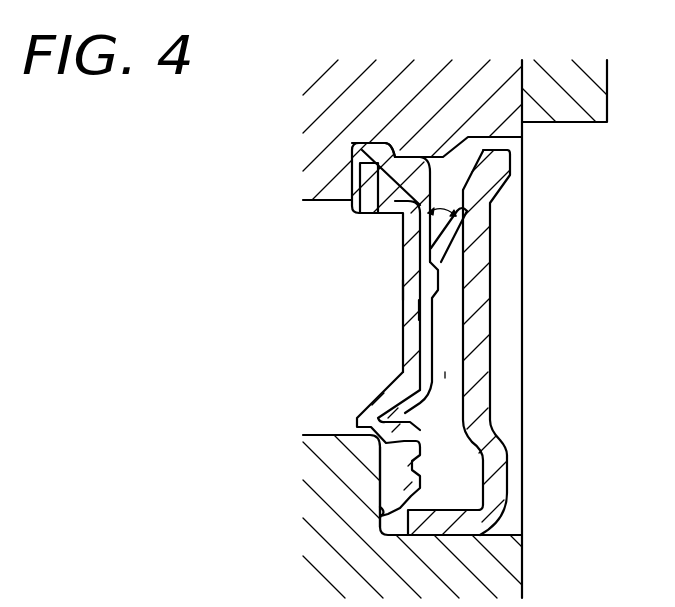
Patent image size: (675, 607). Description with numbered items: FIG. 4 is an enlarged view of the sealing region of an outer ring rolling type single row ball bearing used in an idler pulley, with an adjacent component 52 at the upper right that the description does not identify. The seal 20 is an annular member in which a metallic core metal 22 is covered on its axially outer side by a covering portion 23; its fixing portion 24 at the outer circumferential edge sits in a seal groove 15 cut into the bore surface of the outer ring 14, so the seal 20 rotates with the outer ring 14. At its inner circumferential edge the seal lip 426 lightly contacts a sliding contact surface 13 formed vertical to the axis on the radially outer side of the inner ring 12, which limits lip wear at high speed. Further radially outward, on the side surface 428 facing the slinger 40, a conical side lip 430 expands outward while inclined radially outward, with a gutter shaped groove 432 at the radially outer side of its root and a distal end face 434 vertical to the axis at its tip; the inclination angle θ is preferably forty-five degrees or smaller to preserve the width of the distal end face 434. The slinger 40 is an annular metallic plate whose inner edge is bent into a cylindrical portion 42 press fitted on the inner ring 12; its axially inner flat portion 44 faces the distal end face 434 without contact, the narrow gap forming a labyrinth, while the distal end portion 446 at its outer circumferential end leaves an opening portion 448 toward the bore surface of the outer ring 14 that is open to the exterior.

The inner ring 12 is at (455, 587).
The sliding contact surface 13 is at (378, 520).
The outer ring 14 is at (476, 96).
The seal groove 15 is at (418, 148).
The seal 20 is at (436, 372).
The core metal 22 is at (407, 286).
The covering portion 23 is at (420, 401).
The fixing portion 24 is at (372, 140).
The slinger 40 is at (490, 358).
The cylindrical portion 42 is at (480, 537).
The flat portion 44 is at (462, 297).
The cover member 52 is at (588, 86).
The dust lip 426 is at (380, 486).
The side lip 428 is at (405, 310).
The main lip 430 is at (438, 241).
The auxiliary lip 432 is at (428, 237).
The lip portion 434 is at (440, 215).
The outer peripheral lip 446 is at (503, 163).
The end face 448 is at (496, 141).